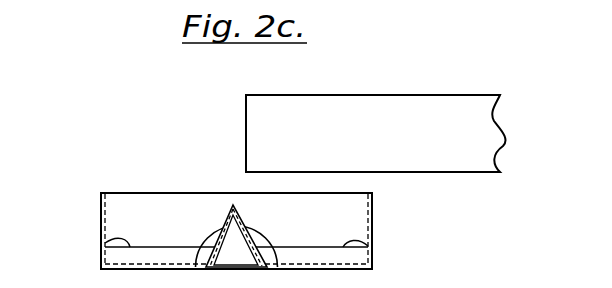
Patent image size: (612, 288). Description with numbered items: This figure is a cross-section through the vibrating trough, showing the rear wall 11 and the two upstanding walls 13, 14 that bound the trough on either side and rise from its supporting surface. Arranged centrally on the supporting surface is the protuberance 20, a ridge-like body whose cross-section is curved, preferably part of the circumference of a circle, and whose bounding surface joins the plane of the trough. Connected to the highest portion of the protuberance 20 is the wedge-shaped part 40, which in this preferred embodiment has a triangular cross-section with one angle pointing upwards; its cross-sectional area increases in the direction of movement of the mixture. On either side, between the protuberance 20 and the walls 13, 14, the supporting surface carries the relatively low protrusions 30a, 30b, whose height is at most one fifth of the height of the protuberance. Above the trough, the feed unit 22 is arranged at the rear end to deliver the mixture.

The feed unit 22 is at (357, 108).
The rear wall 11 is at (123, 203).
The wall 14 is at (101, 207).
The wall 13 is at (372, 209).
The protuberance 20 is at (205, 240).
The wedge-shaped part 40 is at (243, 222).
The protrusion 30b is at (101, 239).
The protrusion 30a is at (345, 250).